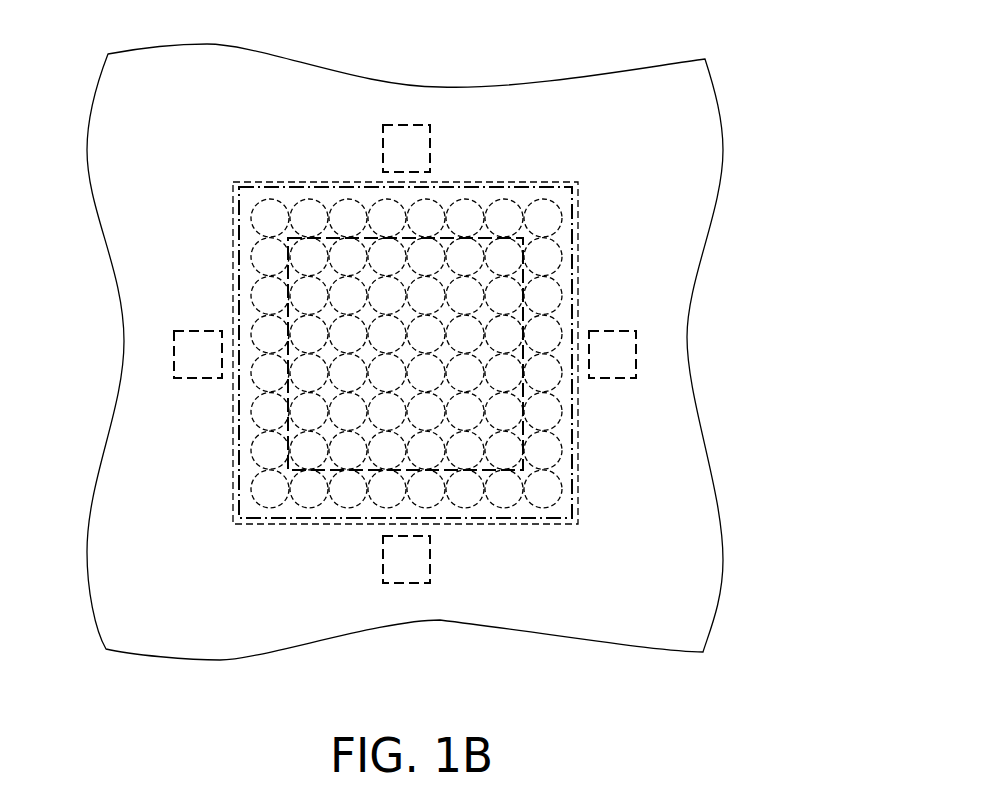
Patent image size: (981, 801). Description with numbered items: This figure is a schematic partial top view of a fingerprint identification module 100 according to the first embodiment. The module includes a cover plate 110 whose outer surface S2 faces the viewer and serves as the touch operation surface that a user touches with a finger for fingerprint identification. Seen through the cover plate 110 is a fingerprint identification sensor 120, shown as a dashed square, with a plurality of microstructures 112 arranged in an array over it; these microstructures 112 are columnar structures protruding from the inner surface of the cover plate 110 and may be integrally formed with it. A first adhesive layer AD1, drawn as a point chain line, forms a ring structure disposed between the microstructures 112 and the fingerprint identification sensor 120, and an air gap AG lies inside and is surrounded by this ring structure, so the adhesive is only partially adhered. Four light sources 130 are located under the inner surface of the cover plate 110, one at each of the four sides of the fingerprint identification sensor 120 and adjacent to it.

The cover plate 110 is at (634, 107).
The fingerprint identification sensor 120 is at (310, 182).
The light source 130 is at (407, 125).
The microstructures 112 is at (549, 206).
The first adhesive layer AD1 is at (238, 248).
The air gap AG is at (408, 352).
The outer surface S2 is at (665, 190).
The fingerprint identification module 100 is at (808, 682).